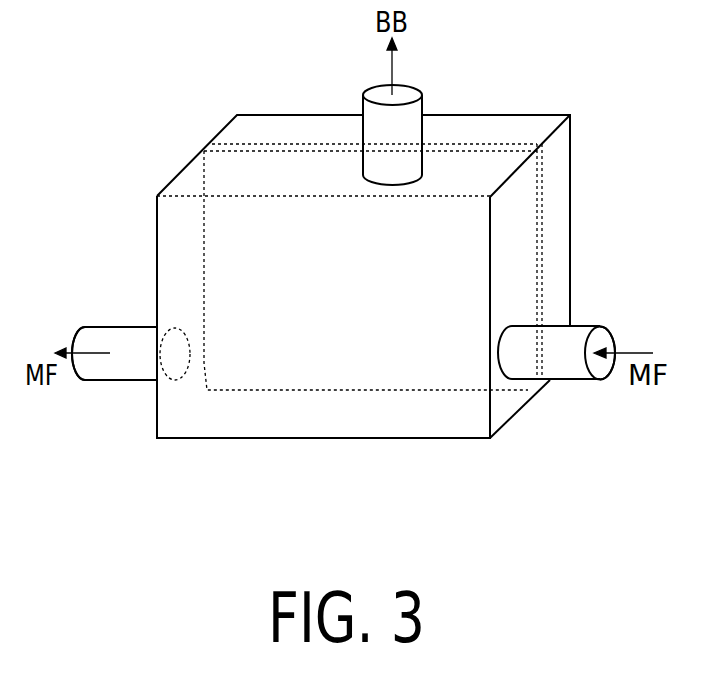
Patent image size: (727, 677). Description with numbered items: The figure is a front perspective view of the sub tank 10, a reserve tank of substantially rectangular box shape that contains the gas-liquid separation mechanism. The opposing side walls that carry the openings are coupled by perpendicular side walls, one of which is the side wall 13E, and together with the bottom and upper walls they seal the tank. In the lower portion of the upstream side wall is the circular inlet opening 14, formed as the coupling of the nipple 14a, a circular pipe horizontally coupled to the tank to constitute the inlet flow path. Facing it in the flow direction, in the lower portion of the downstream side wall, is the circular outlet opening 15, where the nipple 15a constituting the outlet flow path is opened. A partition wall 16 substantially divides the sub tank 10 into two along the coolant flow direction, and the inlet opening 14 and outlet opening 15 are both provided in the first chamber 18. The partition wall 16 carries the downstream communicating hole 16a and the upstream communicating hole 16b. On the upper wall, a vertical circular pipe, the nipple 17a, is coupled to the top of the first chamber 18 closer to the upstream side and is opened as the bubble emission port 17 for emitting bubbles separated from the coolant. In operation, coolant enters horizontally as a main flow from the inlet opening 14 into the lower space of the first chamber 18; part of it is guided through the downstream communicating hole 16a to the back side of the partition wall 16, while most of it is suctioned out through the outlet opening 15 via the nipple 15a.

The sub tank 10 is at (552, 83).
The side wall 13E is at (372, 440).
The inlet opening 14 is at (490, 335).
The nipple 14a is at (566, 380).
The outlet opening 15 is at (187, 376).
The nipple 15a is at (111, 382).
The partition wall 16 is at (204, 242).
The downstream communicating hole 16a is at (202, 372).
The upstream communicating hole 16b is at (537, 212).
The bubble emission port 17 is at (389, 185).
The nipple 17a is at (422, 130).
The first chamber 18 is at (505, 272).